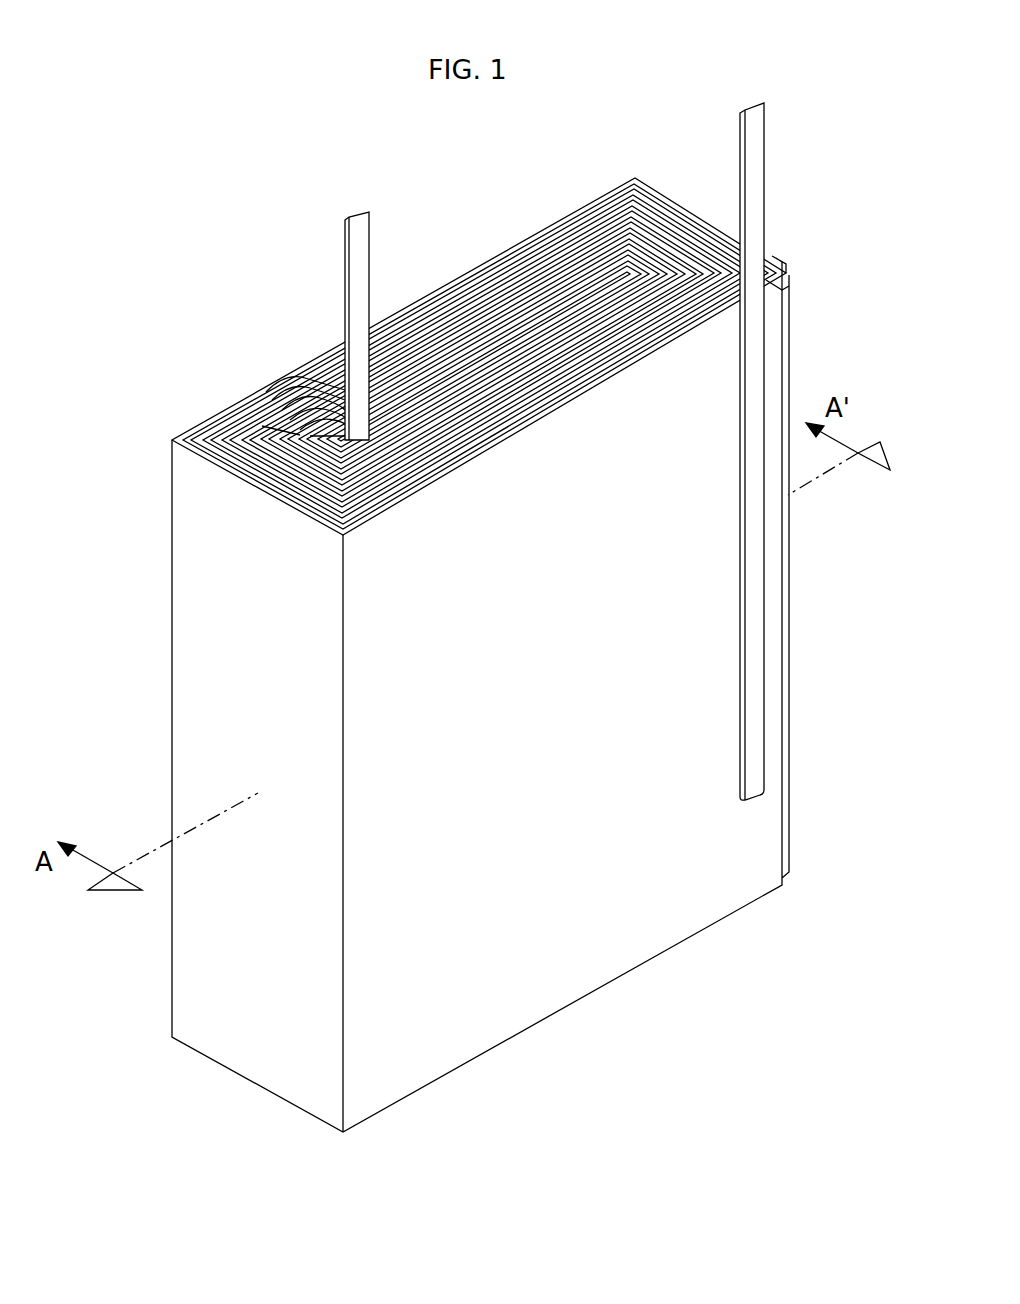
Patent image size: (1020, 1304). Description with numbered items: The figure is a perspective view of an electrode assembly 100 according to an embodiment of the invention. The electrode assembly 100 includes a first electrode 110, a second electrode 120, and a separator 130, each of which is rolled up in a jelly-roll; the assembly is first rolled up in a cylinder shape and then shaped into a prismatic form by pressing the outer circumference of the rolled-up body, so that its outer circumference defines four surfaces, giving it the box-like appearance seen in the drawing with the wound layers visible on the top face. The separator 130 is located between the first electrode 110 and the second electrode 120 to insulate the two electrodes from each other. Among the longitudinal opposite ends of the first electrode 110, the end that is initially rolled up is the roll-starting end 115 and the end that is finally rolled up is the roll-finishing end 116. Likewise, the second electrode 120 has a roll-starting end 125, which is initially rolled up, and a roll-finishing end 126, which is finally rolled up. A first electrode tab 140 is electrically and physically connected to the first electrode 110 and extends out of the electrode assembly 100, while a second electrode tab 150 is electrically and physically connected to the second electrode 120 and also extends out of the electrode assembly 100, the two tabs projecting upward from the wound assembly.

The electrode assembly 100 is at (185, 180).
The first electrode 110 is at (570, 323).
The roll-starting end 115 is at (258, 432).
The roll-finishing end 116 is at (782, 266).
The second electrode 120 is at (468, 363).
The roll-starting end 125 is at (270, 386).
The roll-finishing end 126 is at (776, 291).
The separator 130 is at (420, 383).
The first electrode tab 140 is at (755, 167).
The second electrode tab 150 is at (345, 266).